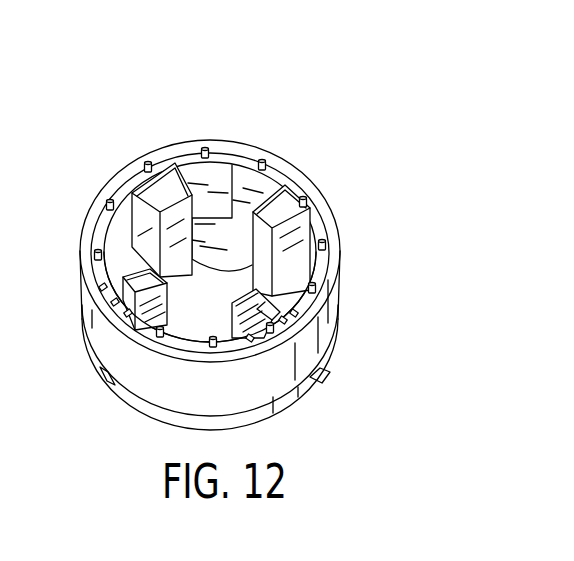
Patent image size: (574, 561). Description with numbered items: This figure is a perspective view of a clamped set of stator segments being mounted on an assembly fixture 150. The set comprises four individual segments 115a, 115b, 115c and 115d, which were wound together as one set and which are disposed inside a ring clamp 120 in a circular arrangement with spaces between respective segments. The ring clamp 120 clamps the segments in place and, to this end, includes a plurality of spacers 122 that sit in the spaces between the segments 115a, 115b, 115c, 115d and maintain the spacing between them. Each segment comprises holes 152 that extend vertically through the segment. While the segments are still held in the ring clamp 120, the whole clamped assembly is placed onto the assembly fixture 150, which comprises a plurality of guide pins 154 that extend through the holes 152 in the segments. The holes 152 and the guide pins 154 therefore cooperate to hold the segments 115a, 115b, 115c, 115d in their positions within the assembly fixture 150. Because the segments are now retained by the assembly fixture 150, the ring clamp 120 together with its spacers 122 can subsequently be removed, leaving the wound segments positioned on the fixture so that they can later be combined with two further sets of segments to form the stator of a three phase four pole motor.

The segment 115a is at (123, 278).
The segment 115b is at (262, 308).
The segment 115c is at (312, 206).
The segment 115d is at (163, 165).
The ring clamp 120 is at (100, 340).
The spacers 122 is at (225, 146).
The assembly fixture 150 is at (175, 415).
The holes 152 is at (333, 258).
The guide pins 154 is at (208, 147).